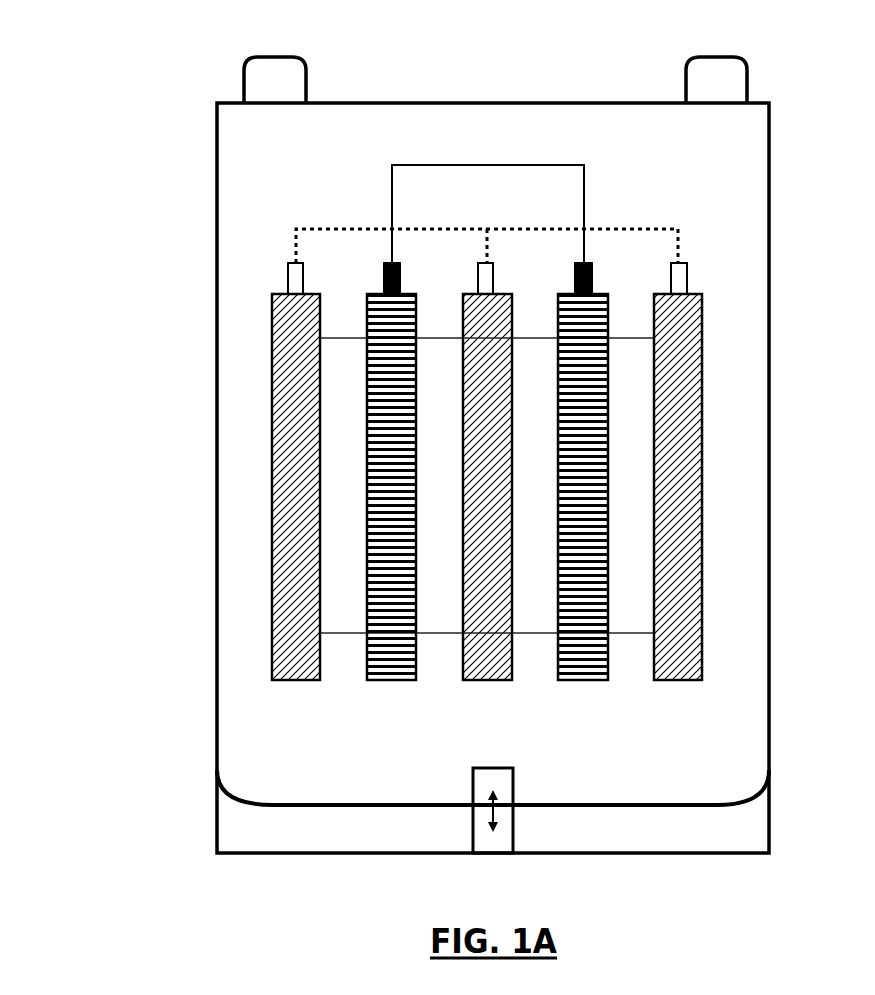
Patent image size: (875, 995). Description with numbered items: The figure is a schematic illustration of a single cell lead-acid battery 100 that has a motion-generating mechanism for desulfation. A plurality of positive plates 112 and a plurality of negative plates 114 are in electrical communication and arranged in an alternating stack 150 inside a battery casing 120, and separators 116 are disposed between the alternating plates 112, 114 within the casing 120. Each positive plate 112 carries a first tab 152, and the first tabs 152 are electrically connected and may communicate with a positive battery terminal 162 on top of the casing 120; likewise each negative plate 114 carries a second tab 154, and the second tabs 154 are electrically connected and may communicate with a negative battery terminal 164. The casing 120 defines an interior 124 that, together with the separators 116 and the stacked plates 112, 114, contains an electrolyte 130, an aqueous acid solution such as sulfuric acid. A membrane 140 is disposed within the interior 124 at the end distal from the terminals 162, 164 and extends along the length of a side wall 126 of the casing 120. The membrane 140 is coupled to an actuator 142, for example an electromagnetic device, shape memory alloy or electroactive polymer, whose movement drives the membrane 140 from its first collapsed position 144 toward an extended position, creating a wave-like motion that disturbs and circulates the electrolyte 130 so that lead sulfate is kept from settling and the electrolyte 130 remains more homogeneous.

The battery 100 is at (456, 478).
The positive plates 112 is at (272, 476).
The negative plates 114 is at (583, 682).
The separators 116 is at (343, 636).
The battery casing 120 is at (770, 480).
The interior 124 is at (240, 185).
The side wall 126 is at (673, 853).
The electrolyte 130 is at (357, 162).
The membrane 140 is at (582, 800).
The actuator 142 is at (507, 768).
The first collapsed position 144 is at (236, 752).
The alternating stack 150 is at (427, 448).
The first tab 152 is at (288, 280).
The second tab 154 is at (590, 275).
The positive battery terminal 162 is at (306, 63).
The negative battery terminal 164 is at (747, 63).